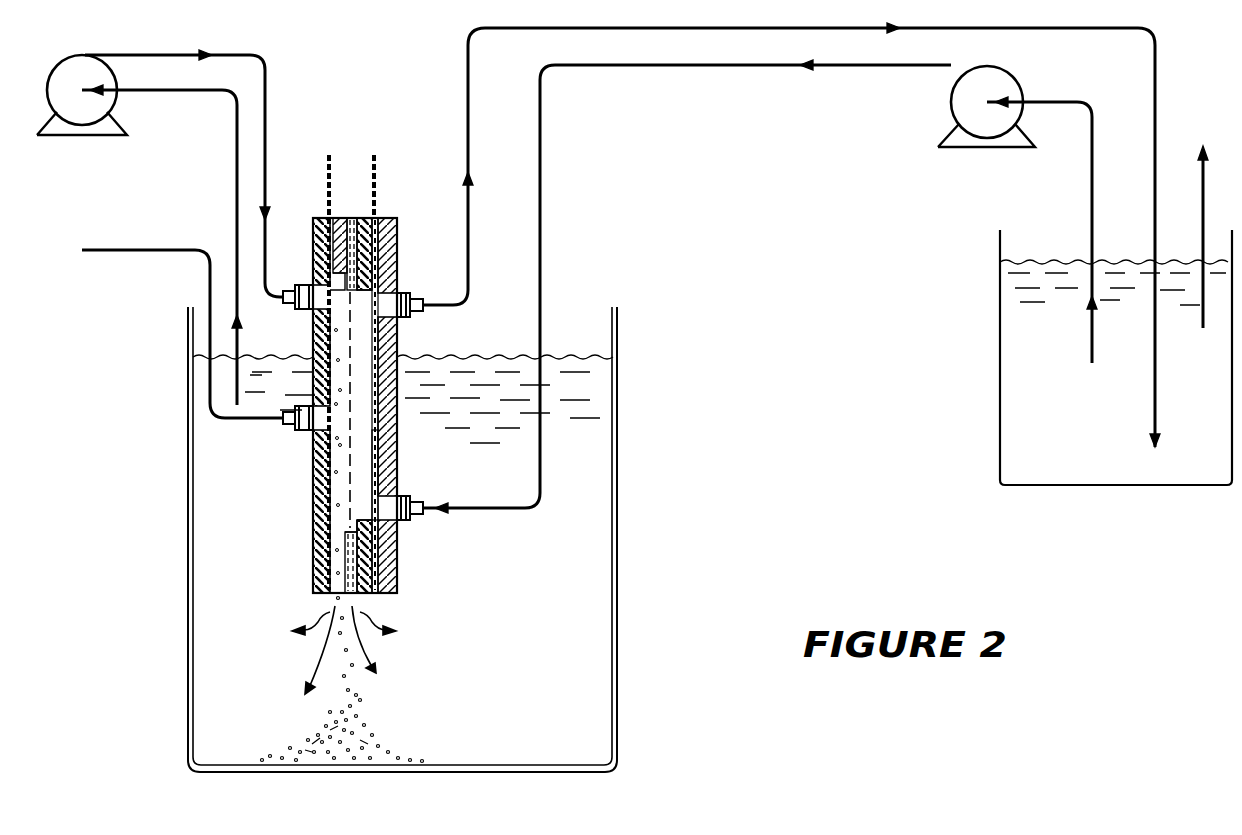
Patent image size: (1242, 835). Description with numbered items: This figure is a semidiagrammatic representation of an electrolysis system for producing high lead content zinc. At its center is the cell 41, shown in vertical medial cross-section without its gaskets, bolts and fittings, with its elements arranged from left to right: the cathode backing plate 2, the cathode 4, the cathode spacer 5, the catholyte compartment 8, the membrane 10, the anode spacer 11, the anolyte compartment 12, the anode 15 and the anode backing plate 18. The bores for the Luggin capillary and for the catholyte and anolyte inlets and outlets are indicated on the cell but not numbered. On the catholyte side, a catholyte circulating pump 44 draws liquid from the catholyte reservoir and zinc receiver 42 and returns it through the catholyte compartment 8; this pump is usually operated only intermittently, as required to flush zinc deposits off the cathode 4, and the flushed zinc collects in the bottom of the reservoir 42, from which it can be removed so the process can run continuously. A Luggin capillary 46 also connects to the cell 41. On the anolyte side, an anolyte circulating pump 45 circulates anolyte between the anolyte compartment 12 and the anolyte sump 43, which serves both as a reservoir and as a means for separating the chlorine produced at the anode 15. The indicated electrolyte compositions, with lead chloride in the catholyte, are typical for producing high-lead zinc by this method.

The cathode backing plate 2 is at (322, 556).
The cathode 4 is at (327, 172).
The cathode spacer 5 is at (341, 218).
The catholyte compartment 8 is at (320, 350).
The membrane 10 is at (386, 348).
The anode spacer 11 is at (363, 218).
The anolyte compartment 12 is at (358, 470).
The anode 15 is at (379, 178).
The anode backing plate 18 is at (394, 453).
The cell 41 is at (292, 508).
The catholyte reservoir and zinc receiver 42 is at (188, 641).
The anolyte sump 43 is at (1000, 348).
The catholyte circulating pump 44 is at (45, 72).
The anolyte circulating pump 45 is at (930, 120).
The Luggin capillary 46 is at (133, 249).